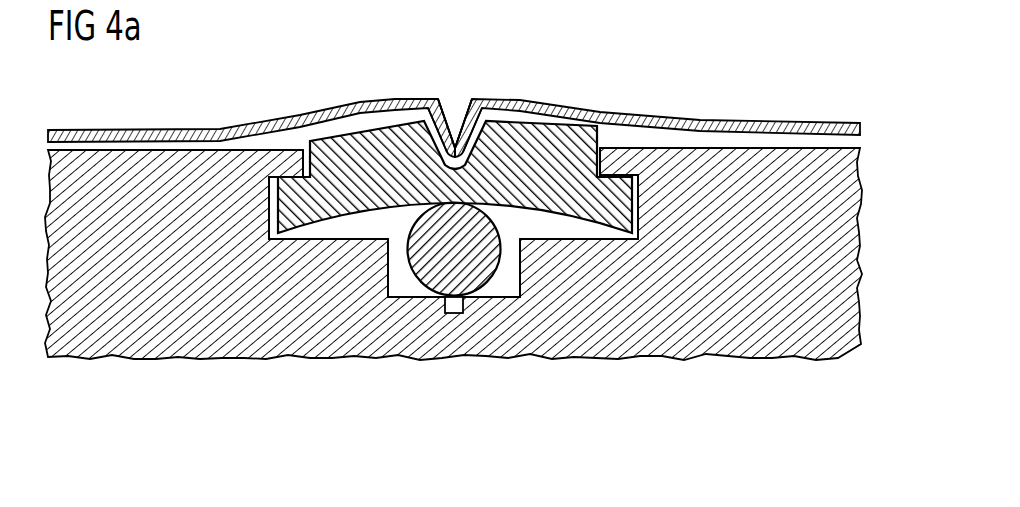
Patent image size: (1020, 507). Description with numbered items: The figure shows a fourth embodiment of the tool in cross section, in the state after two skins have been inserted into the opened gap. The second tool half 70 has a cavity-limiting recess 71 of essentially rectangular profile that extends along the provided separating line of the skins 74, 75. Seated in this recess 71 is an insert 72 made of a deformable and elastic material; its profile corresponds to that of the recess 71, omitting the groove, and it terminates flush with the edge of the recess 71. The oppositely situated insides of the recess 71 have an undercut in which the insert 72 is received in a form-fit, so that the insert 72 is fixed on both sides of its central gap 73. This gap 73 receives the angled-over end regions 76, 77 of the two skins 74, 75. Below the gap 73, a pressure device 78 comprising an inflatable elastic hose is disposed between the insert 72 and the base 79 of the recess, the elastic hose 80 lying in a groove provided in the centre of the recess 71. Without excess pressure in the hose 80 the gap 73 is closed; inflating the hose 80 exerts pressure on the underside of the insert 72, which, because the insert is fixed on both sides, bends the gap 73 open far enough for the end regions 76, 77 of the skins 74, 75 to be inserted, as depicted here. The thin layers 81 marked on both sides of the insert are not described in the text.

The second tool half 70 is at (183, 352).
The recess 71 is at (317, 242).
The insert 72 is at (287, 210).
The gap 73 is at (457, 117).
The skin 74 is at (187, 128).
The skin 75 is at (753, 122).
The end region 76 is at (447, 117).
The end region 77 is at (463, 117).
The pressure device 78 is at (428, 312).
The base of the recess 79 is at (500, 297).
The elastic hose 80 is at (483, 260).
The gap 81 is at (275, 192).